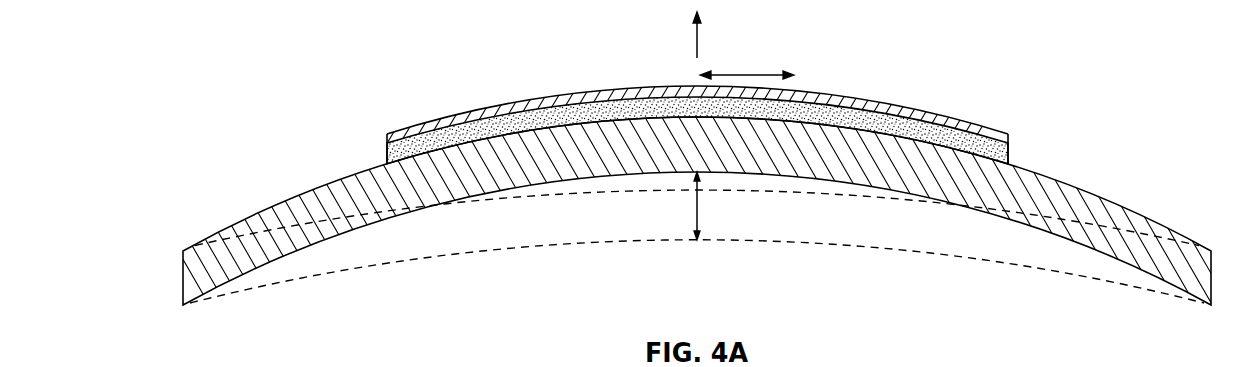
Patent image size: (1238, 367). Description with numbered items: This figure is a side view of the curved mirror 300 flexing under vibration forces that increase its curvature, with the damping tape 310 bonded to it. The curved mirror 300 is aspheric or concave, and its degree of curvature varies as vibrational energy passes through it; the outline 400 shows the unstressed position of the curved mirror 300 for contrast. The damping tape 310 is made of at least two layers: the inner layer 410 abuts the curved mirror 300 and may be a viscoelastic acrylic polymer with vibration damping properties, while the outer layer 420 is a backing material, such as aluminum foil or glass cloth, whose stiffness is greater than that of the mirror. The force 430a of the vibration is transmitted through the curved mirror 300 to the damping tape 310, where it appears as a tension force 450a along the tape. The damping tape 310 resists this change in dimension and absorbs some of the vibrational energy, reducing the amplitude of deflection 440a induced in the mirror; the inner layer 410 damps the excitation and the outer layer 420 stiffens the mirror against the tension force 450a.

The curved mirror 300 is at (183, 282).
The damping tape 310 is at (751, 101).
The outline 400 is at (455, 255).
The inner layer 410 is at (547, 102).
The outer layer 420 is at (458, 122).
The force 430a is at (695, 32).
The tension force 450a is at (748, 72).
The amplitude of deflection 440a is at (698, 207).